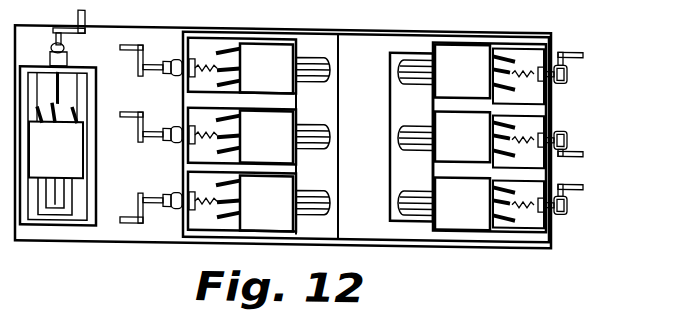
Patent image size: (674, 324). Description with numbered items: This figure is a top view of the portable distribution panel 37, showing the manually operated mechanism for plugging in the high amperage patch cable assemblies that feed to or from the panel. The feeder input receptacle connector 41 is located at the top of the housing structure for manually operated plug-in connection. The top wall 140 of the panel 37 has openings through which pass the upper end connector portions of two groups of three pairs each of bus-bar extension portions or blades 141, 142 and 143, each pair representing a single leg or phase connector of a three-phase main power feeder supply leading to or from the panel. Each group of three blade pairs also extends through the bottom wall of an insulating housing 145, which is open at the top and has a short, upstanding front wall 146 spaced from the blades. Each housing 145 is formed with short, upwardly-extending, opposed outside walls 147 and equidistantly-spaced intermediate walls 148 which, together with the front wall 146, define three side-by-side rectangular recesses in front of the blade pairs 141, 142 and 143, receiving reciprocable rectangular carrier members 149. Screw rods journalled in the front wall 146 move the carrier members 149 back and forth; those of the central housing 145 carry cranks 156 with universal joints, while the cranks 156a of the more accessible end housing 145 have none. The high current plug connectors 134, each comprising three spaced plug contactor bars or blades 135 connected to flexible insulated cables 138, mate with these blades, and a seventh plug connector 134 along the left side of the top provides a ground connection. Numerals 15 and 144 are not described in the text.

The portable distribution panel 37 is at (149, 21).
The feeder input receptacle connector 41 is at (360, 36).
The outside walls 147 is at (243, 17).
The top wall 140 is at (140, 97).
The intermediate walls 148 is at (188, 98).
The cranks 156 is at (137, 126).
The front wall 146 is at (182, 147).
The section line 15 is at (128, 198).
The carrier members 149 is at (298, 89).
The flexible insulated cables 138 is at (242, 114).
The high current connector 134 is at (68, 160).
The insulating housing 145 is at (398, 102).
The contact housing 144 is at (378, 145).
The plug contactor bars 135 is at (297, 141).
The bus-bar extension blades 141 is at (315, 206).
The bus-bar extension blades 143 is at (412, 75).
The bus-bar extension blades 142 is at (412, 140).
The cranks 156a is at (575, 53).